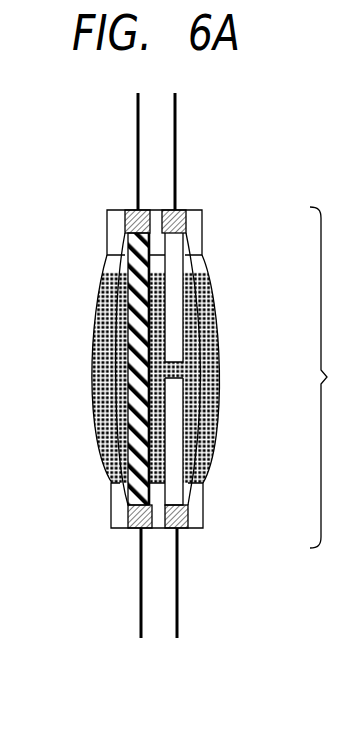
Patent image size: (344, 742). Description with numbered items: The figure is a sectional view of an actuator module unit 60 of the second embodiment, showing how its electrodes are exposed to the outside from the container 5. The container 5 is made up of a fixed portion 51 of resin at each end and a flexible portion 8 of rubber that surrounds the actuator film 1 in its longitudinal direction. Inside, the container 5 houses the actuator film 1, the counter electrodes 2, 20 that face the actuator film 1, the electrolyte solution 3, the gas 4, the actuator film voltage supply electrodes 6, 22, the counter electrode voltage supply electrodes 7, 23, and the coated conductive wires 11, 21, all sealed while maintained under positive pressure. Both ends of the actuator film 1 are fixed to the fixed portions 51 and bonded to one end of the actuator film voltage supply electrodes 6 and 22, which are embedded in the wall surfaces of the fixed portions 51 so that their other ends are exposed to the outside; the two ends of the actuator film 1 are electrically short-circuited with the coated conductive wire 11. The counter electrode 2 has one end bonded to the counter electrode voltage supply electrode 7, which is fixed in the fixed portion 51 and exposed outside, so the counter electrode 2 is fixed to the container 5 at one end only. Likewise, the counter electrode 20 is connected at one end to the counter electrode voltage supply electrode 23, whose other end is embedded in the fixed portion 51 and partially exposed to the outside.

The actuator film 1 is at (130, 373).
The counter electrode 2 is at (175, 472).
The electrolyte solution 3 is at (102, 442).
The gas 4 is at (110, 263).
The container 5 is at (327, 377).
The actuator film voltage supply electrode 6 is at (112, 523).
The counter electrode voltage supply electrode 7 is at (183, 528).
The flexible portion 8 is at (221, 377).
The coated conductive wire 11 is at (117, 323).
The counter electrode 20 is at (177, 323).
The coated conductive wire 21 is at (203, 420).
The actuator film voltage supply electrode 22 is at (107, 216).
The counter electrode voltage supply electrode 23 is at (186, 223).
The fixed portion 51 is at (197, 240).
The actuator module unit 60 is at (178, 705).